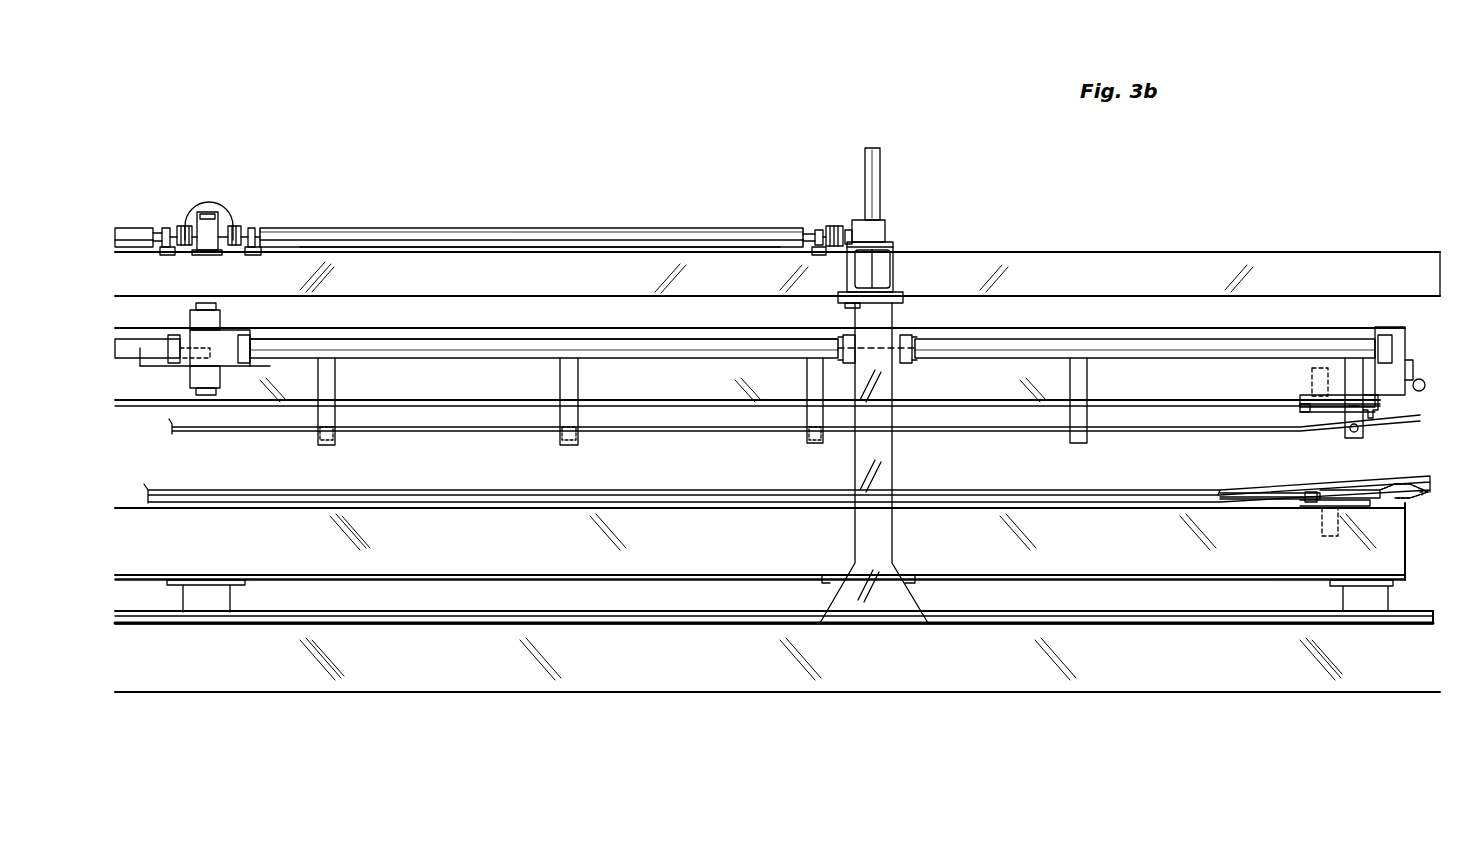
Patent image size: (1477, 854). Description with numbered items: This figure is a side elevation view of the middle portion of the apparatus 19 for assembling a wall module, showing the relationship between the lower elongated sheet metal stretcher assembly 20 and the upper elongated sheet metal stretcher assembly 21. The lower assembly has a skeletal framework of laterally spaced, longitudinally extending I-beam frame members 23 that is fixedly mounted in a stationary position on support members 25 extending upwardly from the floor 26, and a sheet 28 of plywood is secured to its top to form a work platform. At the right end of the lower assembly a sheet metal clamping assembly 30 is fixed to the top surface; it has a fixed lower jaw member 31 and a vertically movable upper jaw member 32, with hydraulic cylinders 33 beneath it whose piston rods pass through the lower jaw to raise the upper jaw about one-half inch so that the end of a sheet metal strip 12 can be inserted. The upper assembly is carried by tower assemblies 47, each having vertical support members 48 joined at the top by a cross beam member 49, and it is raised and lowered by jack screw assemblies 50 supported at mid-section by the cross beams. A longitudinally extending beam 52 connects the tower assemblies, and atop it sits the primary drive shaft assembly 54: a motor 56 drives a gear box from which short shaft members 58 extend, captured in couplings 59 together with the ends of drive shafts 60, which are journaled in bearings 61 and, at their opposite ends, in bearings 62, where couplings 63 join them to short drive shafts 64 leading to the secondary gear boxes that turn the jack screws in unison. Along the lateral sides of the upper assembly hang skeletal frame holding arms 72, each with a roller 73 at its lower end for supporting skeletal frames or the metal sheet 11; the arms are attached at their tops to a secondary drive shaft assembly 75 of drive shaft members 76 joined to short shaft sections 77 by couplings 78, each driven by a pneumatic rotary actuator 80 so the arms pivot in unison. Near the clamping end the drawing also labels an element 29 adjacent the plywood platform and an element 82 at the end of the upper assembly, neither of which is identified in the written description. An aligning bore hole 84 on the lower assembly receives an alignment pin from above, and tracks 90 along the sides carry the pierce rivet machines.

The metal sheet 11 is at (995, 438).
The sheet metal strip 12 is at (896, 498).
The apparatus 19 is at (1070, 268).
The lower elongated sheet metal stretcher assembly 20 is at (481, 586).
The upper elongated sheet metal stretcher assembly 21 is at (1116, 325).
The I-beam frame member 23 is at (436, 551).
The support member 25 is at (225, 598).
The floor 26 is at (686, 672).
The sheet of plywood 28 is at (1213, 508).
The rail junction 29 is at (1218, 488).
The sheet metal clamping assembly 30 is at (1294, 406).
The lower jaw member 31 is at (1305, 388).
The upper jaw member 32 is at (1310, 410).
The hydraulic cylinder 33 is at (1317, 368).
The tower assembly 47 is at (904, 314).
The vertical support member 48 is at (885, 540).
The cross beam member 49 is at (894, 257).
The jack screw assembly 50 is at (895, 164).
The longitudinally extending beam 52 is at (575, 286).
The primary drive shaft assembly 54 is at (430, 223).
The motor 56 is at (206, 201).
The short shaft member 58 is at (165, 254).
The coupling 59 is at (183, 226).
The drive shaft 60 is at (125, 230).
The bearing 61 is at (163, 228).
The bearing 62 is at (815, 225).
The coupling 63 is at (835, 226).
The short drive shaft 64 is at (853, 222).
The skeletal frame holding arm 72 is at (560, 417).
The roller 73 is at (580, 438).
The secondary drive shaft assembly 75 is at (320, 335).
The drive shaft member 76 is at (470, 355).
The short shaft section 77 is at (168, 434).
The coupling 78 is at (187, 340).
The pneumatic rotary actuator 80 is at (218, 322).
The end bracket 82 is at (1376, 415).
The aligning bore hole 84 is at (1388, 485).
The track 90 is at (1162, 631).